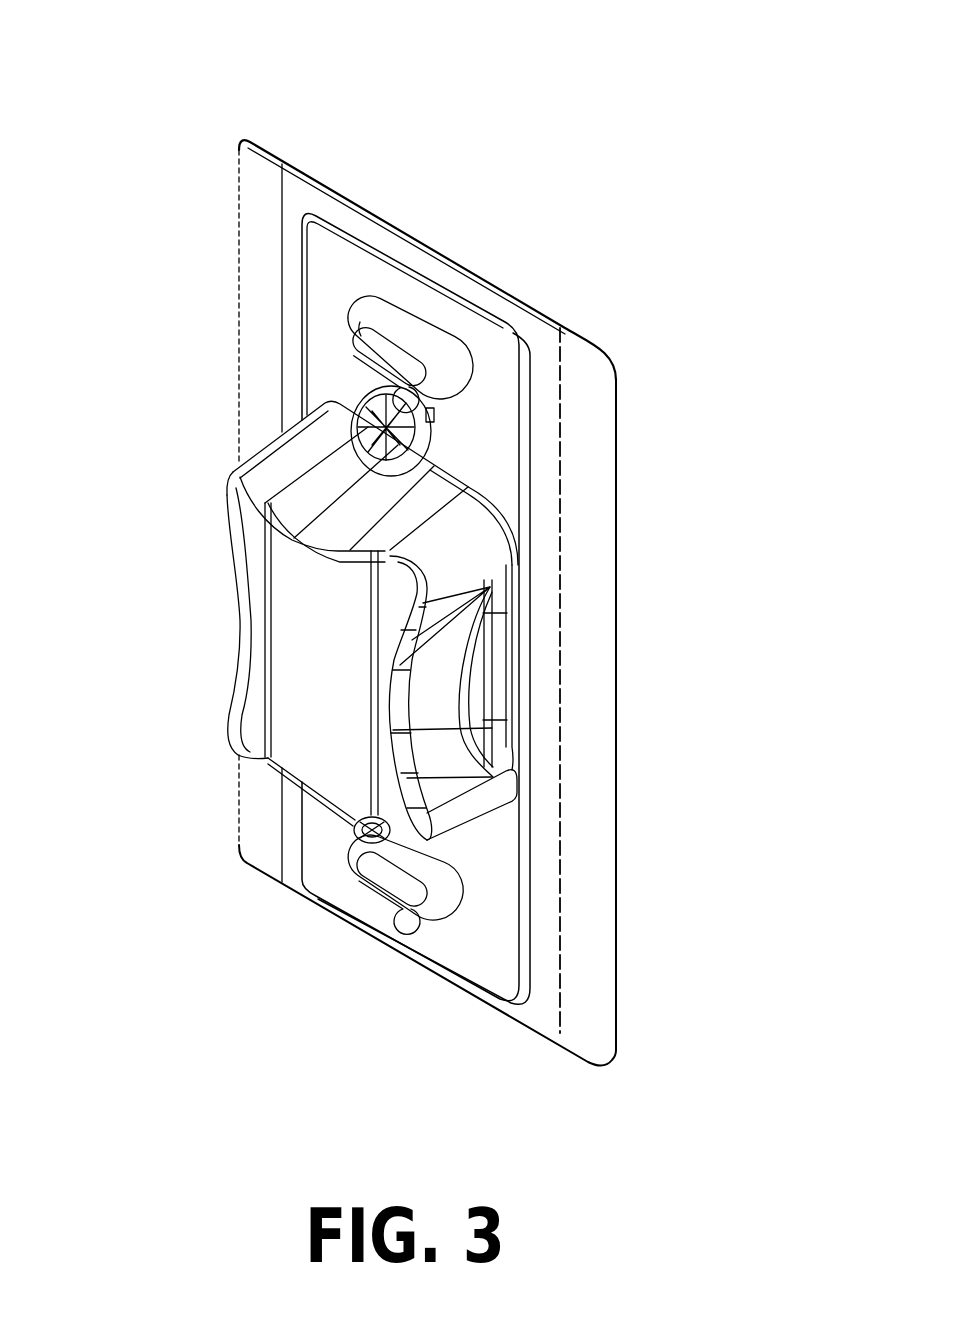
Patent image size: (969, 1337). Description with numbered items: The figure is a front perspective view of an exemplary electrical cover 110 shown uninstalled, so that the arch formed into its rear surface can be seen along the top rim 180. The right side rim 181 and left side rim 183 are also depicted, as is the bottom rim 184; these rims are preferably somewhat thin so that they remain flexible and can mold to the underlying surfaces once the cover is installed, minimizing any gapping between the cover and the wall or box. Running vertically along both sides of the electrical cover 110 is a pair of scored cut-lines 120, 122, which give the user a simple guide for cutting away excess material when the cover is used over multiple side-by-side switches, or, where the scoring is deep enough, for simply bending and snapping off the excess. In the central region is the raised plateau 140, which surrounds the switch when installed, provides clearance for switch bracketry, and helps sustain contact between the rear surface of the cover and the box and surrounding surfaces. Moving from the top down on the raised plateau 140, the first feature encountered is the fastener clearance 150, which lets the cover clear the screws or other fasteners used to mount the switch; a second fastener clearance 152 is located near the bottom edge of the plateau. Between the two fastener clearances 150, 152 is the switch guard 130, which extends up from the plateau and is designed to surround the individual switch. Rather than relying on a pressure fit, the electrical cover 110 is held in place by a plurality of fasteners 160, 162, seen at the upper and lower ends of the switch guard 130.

The electrical cover 110 is at (438, 628).
The scored cut-line 120 is at (442, 599).
The scored cut-line 122 is at (562, 286).
The switch guard 130 is at (281, 586).
The raised plateau 140 is at (411, 527).
The fastener clearance 150 is at (433, 343).
The second fastener clearance 152 is at (382, 883).
The fastener 160 is at (357, 393).
The fastener 162 is at (355, 822).
The top rim 180 is at (601, 336).
The right side rim 181 is at (598, 593).
The left side rim 183 is at (262, 248).
The bottom rim 184 is at (495, 1010).